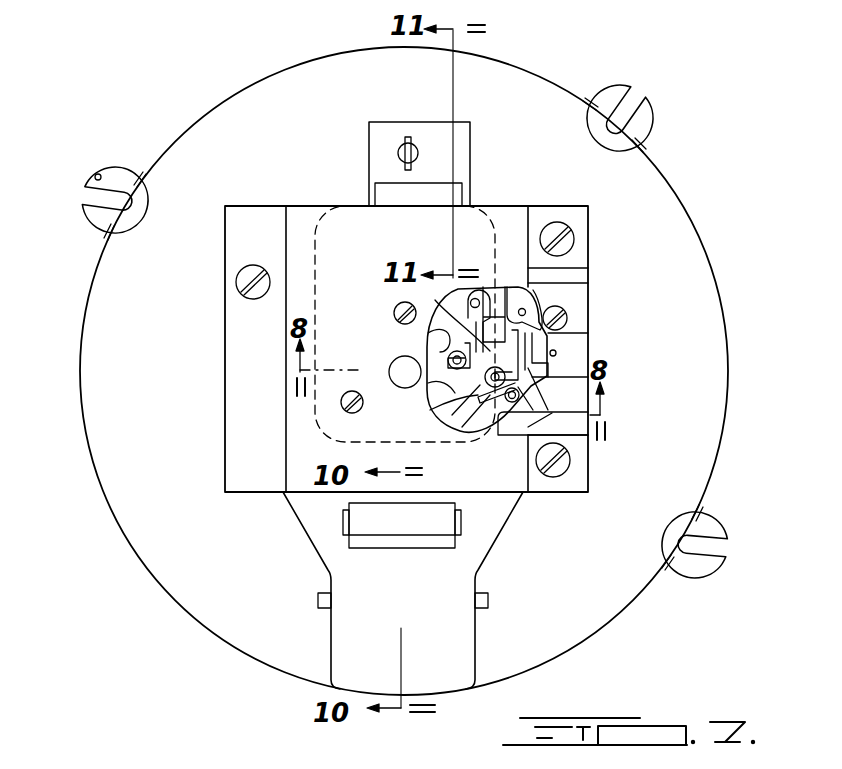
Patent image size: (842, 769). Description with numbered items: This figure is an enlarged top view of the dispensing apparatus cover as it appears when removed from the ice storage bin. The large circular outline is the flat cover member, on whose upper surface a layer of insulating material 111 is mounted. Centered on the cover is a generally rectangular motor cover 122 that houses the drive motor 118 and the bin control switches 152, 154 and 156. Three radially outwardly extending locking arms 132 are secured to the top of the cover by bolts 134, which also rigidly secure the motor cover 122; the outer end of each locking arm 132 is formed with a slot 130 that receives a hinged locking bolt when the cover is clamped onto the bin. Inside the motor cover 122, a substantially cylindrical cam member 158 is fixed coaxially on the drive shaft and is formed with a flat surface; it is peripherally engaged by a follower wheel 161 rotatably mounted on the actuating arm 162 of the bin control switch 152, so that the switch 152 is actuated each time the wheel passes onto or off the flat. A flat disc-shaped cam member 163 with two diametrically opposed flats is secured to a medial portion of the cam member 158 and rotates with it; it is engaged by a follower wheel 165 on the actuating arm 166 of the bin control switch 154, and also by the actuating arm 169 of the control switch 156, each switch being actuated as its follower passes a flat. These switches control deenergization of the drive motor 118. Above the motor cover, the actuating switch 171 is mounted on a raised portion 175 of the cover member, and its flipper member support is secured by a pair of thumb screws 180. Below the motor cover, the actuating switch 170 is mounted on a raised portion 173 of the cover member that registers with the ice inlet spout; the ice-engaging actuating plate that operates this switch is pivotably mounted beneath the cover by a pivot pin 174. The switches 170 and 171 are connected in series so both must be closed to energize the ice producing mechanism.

The insulating material 111 is at (125, 487).
The drive motor 118 is at (313, 254).
The motor cover 122 is at (286, 395).
The slots 130 is at (101, 174).
The locking arms 132 is at (140, 168).
The bolts 134 is at (248, 297).
The bin control switch 152 is at (449, 332).
The bin control switch 154 is at (537, 367).
The bin control switch 156 is at (492, 422).
The cam member 158 is at (462, 307).
The follower wheel 161 is at (428, 386).
The actuating arm 162 is at (481, 296).
The cam member 163 is at (536, 311).
The follower wheel 165 is at (465, 392).
The actuating arm 166 is at (486, 355).
The actuating arm 169 is at (480, 397).
The actuating switch 170 is at (349, 535).
The actuating switch 171 is at (401, 187).
The raised portion 173 is at (444, 636).
The pivot pin 174 is at (490, 598).
The raised portion 175 is at (462, 146).
The thumb screws 180 is at (398, 150).